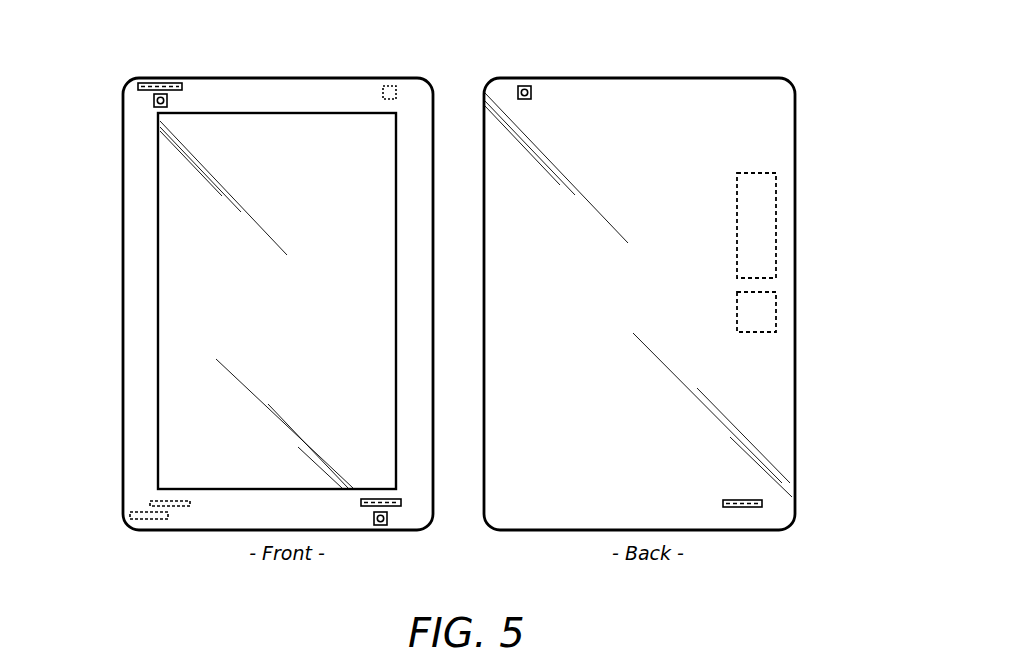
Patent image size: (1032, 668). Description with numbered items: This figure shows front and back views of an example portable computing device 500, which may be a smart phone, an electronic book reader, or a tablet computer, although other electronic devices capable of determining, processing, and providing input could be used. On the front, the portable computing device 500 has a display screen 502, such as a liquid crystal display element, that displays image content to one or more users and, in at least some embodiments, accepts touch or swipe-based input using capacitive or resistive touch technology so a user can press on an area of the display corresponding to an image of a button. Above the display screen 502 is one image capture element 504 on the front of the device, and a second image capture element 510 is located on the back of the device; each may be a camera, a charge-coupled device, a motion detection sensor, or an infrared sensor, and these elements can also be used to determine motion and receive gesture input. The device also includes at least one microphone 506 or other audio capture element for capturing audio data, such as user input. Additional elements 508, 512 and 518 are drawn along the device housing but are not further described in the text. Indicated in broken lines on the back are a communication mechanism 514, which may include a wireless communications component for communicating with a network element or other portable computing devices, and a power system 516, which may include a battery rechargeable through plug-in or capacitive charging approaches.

The portable computing device 500 is at (822, 86).
The display screen 502 is at (157, 222).
The image capture element 504 is at (153, 99).
The microphone 506 is at (170, 83).
The speaker 508 is at (393, 507).
The image capture element 510 is at (389, 87).
The microphone 512 is at (170, 506).
The communication mechanism 514 is at (777, 243).
The power system 516 is at (777, 313).
The connector port 518 is at (148, 520).